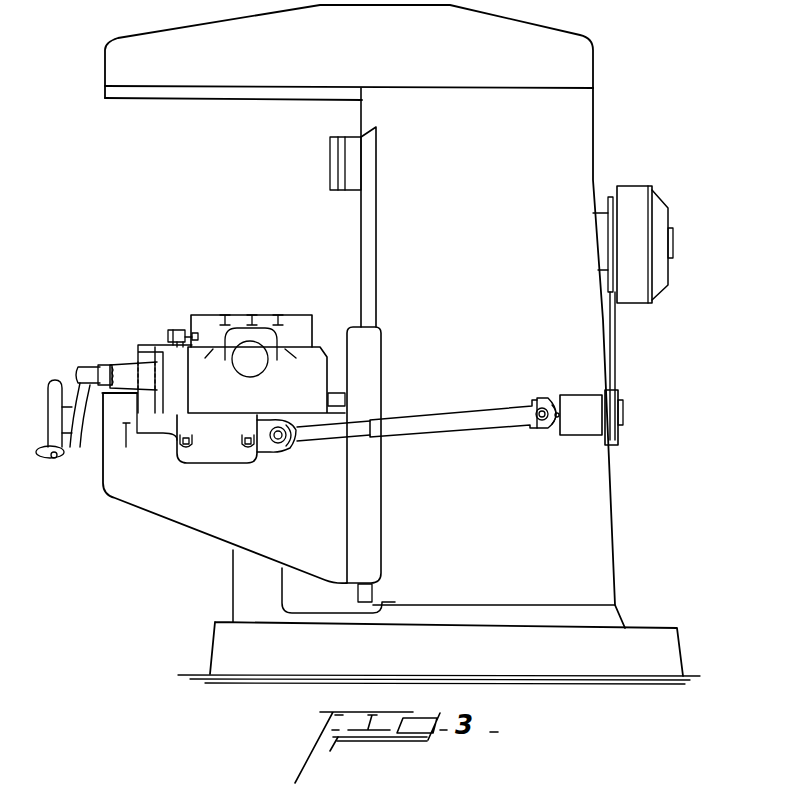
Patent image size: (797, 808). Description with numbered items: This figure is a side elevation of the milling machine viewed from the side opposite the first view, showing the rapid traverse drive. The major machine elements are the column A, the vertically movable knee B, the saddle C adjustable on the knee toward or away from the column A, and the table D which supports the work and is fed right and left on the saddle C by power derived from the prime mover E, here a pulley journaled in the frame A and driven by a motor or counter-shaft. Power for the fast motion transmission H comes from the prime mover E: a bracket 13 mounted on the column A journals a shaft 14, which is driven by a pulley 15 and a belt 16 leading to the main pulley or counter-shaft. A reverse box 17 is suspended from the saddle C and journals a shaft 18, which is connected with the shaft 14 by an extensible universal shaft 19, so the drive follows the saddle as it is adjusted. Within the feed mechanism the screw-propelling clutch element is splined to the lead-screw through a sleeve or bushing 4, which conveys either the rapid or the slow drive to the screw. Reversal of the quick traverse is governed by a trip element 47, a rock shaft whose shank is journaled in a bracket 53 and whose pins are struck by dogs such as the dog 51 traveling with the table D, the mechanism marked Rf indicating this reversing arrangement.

The sleeve or bushing 4 is at (314, 440).
The bracket 13 is at (581, 415).
The shaft 14 is at (549, 400).
The pulley 15 is at (622, 393).
The belt 16 is at (613, 370).
The reverse box 17 is at (229, 455).
The shaft 18 is at (263, 446).
The extensible universal shaft 19 is at (449, 425).
The trip element 47 is at (150, 345).
The dog 51 is at (178, 330).
The bracket 53 is at (138, 352).
The column A is at (512, 369).
The knee B is at (225, 488).
The saddle C is at (266, 380).
The table D is at (251, 346).
The prime mover E is at (633, 244).
The fast motion transmission H is at (479, 415).
The feed reversing mechanism Rf is at (197, 428).